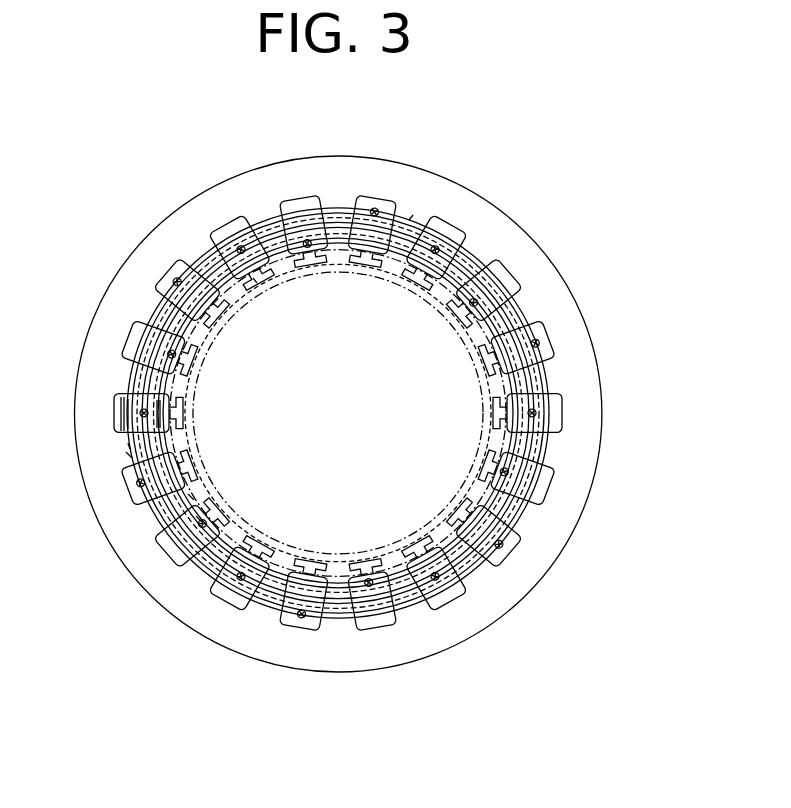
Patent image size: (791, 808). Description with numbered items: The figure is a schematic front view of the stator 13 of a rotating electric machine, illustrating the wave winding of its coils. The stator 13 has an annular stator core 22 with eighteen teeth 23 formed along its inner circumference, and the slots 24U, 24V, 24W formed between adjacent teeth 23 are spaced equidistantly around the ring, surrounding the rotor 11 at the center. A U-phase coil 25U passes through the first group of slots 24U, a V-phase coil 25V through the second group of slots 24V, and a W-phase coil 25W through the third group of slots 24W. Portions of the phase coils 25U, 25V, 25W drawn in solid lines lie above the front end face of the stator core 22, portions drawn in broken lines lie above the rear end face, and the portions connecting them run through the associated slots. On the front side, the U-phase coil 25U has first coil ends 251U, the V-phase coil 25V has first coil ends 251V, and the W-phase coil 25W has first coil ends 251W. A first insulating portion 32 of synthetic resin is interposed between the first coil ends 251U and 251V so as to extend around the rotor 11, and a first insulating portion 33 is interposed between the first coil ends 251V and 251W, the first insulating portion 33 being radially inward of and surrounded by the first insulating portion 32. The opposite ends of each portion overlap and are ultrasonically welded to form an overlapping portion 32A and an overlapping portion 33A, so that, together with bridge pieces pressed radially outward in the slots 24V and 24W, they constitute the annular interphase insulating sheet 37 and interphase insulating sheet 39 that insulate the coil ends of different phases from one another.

The stator 13 is at (500, 148).
The stator core 22 is at (585, 450).
The rotor 11 is at (186, 437).
The teeth 23 is at (475, 325).
The slots 24U is at (551, 339).
The slots 24V is at (563, 417).
The slots 24W is at (512, 272).
The U-phase coil 25U is at (411, 218).
The V-phase coil 25V is at (128, 446).
The W-phase coil 25W is at (255, 281).
The first coil ends 251U is at (334, 208).
The first coil ends 251V is at (235, 282).
The first coil ends 251W is at (450, 272).
The first insulating portion 32 is at (188, 335).
The overlapping portion 32A is at (175, 394).
The first insulating portion 33 is at (180, 388).
The overlapping portion 33A is at (198, 520).
The interphase insulating sheet 37 is at (128, 454).
The interphase insulating sheet 39 is at (190, 496).